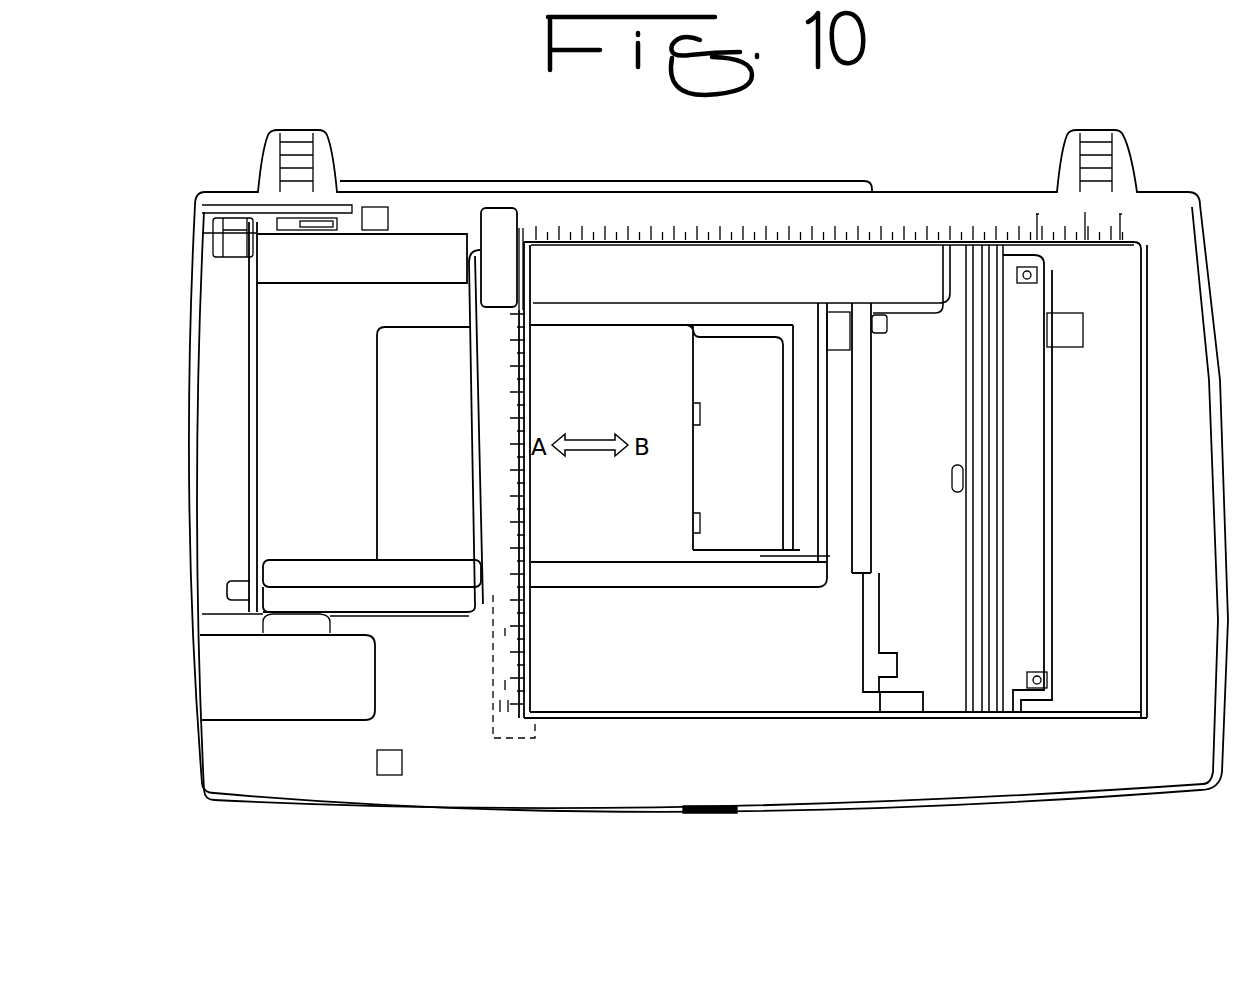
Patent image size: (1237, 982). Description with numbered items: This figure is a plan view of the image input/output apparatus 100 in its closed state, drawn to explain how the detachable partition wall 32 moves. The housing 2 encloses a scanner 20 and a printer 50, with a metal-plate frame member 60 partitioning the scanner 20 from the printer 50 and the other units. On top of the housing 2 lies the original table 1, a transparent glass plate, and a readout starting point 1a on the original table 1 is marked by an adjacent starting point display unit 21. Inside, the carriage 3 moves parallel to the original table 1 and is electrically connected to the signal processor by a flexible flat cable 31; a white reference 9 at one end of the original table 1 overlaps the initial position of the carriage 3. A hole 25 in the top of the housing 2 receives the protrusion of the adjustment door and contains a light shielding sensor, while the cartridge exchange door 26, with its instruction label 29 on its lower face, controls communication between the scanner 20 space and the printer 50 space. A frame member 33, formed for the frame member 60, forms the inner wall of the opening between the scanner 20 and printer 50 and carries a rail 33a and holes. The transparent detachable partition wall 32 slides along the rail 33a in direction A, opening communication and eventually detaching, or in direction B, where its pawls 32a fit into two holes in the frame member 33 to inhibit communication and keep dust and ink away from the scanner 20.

The image input/output apparatus 100 is at (940, 182).
The original table 1 is at (1130, 703).
The readout starting point 1a is at (527, 250).
The housing 2 is at (1015, 778).
The carriage 3 is at (947, 698).
The white reference 9 is at (513, 733).
The scanner 20 is at (1008, 184).
The starting point display unit 21 is at (495, 222).
The hole 25 is at (237, 592).
The cartridge exchange door 26 is at (407, 232).
The instruction label 29 is at (432, 253).
The flexible flat cable 31 is at (833, 330).
The detachable partition wall 32 is at (566, 340).
The pawls 32a is at (700, 418).
The frame member 33 is at (650, 313).
The rail 33a is at (773, 560).
The printer 50 is at (738, 367).
The frame member 60 is at (843, 688).